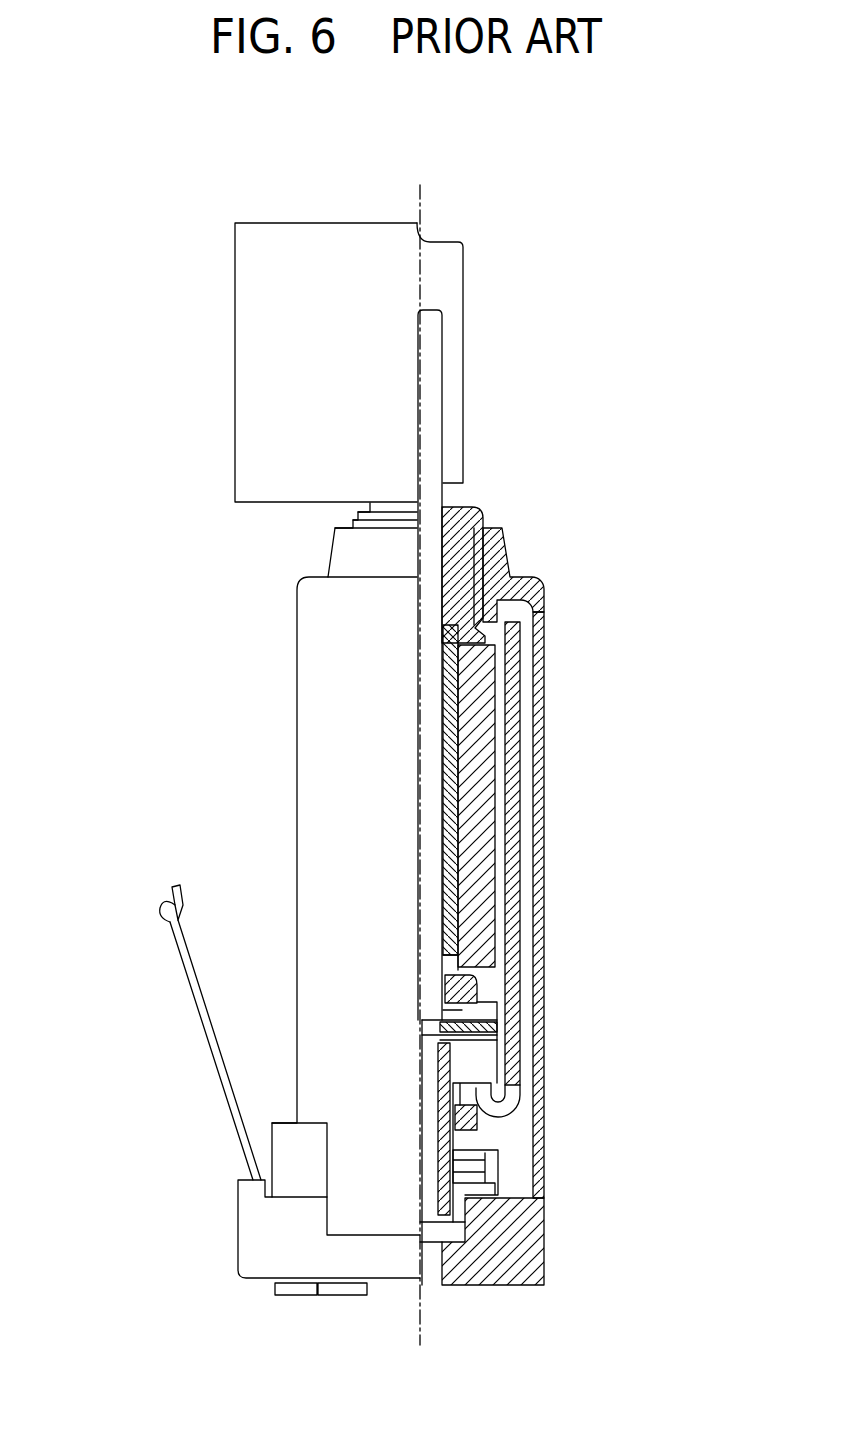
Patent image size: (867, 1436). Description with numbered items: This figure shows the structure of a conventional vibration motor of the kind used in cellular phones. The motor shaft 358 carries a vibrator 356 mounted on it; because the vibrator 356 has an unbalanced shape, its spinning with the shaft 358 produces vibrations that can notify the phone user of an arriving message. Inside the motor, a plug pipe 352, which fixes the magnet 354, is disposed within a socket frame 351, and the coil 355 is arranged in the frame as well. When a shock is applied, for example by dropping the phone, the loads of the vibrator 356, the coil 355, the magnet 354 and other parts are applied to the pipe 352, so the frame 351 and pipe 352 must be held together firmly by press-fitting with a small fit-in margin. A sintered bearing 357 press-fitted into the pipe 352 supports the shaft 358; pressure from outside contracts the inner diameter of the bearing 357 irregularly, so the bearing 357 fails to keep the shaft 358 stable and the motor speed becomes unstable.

The socket frame 351 is at (540, 627).
The pipe 352 is at (508, 568).
The magnet 354 is at (477, 752).
The coil 355 is at (510, 863).
The vibrator 356 is at (302, 363).
The sintered bearing 357 is at (481, 518).
The shaft 358 is at (428, 373).